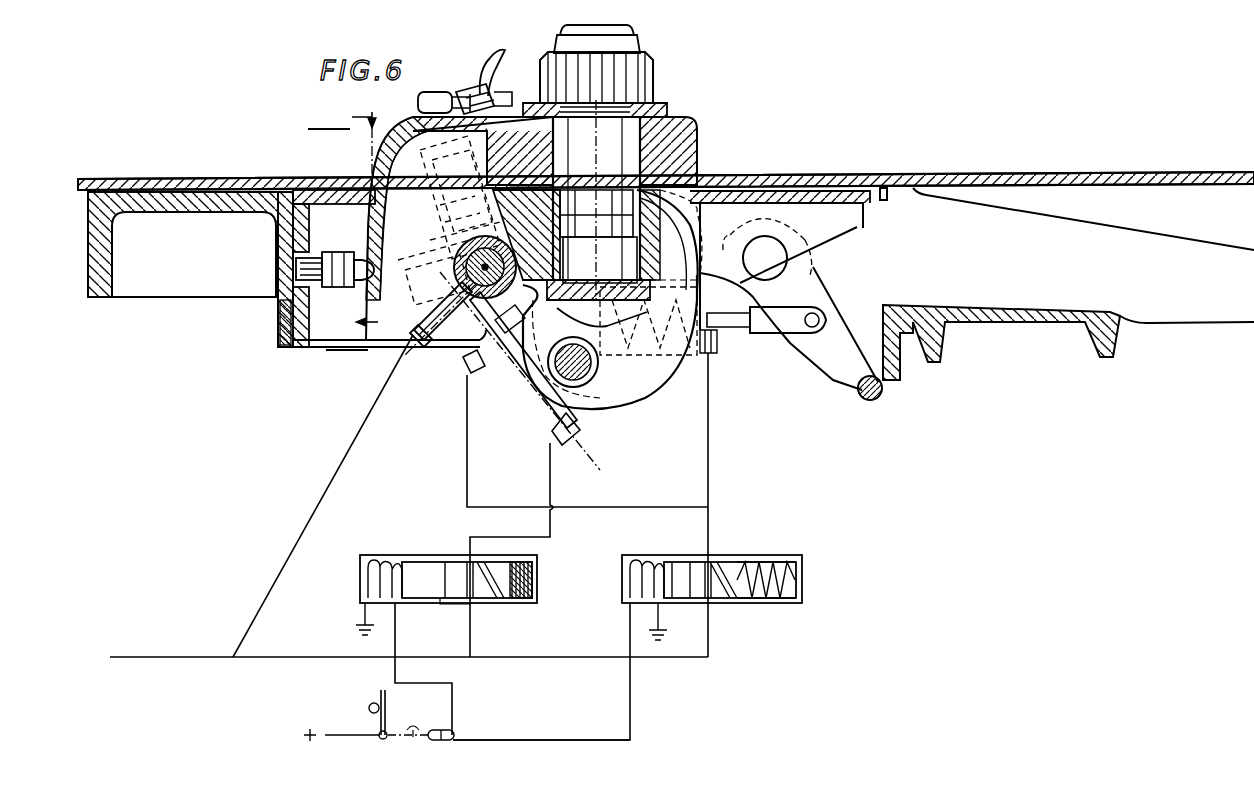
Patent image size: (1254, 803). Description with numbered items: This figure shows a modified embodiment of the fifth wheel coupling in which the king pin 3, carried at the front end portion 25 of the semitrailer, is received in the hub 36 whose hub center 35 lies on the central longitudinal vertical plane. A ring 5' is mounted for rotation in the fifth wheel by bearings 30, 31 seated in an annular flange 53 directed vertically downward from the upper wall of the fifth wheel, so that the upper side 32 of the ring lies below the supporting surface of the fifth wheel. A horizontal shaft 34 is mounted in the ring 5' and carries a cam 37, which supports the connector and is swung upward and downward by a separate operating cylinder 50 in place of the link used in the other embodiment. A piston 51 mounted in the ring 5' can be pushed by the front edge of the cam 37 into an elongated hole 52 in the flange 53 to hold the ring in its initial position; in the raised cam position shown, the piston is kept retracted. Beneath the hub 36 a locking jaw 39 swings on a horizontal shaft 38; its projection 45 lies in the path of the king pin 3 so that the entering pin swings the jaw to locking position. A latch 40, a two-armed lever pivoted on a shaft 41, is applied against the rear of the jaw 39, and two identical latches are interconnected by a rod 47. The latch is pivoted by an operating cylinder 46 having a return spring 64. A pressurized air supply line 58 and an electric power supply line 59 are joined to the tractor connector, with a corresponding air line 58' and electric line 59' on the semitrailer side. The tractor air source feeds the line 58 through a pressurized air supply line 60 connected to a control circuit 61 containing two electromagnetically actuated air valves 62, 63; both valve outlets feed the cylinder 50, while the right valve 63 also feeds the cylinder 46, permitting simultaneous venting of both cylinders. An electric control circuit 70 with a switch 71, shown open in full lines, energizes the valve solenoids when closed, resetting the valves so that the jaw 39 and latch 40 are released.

The king pin 3 is at (672, 160).
The ring 5' is at (382, 232).
The front end portion 25 is at (878, 179).
The bearing 30 is at (277, 231).
The bearing 31 is at (278, 323).
The upper side 32 is at (293, 190).
The horizontal shaft 34 is at (480, 240).
The hub center 35 is at (598, 132).
The hub 36 is at (533, 218).
The cam 37 is at (376, 280).
The horizontal shaft 38 is at (596, 400).
The locking jaw 39 is at (704, 215).
The latch 40 is at (743, 262).
The shaft 41 is at (765, 258).
The projection 45 is at (560, 300).
The operating cylinder 46 is at (713, 346).
The rod 47 is at (862, 396).
The operating cylinder 50 is at (506, 384).
The piston 51 is at (327, 287).
The hole 52 is at (296, 262).
The annular flange 53 is at (278, 222).
The pressurized air supply line 58 is at (427, 351).
The pressurized air line 58' is at (426, 197).
The electric power supply line 59 is at (392, 232).
The electric power supply line 59' is at (495, 82).
The pressurized air supply line 60 is at (200, 657).
The control circuit 61 is at (328, 657).
The air valve 62 is at (379, 555).
The air valve 63 is at (776, 555).
The return spring 64 is at (655, 362).
The electric control circuit 70 is at (594, 740).
The switch 71 is at (372, 712).